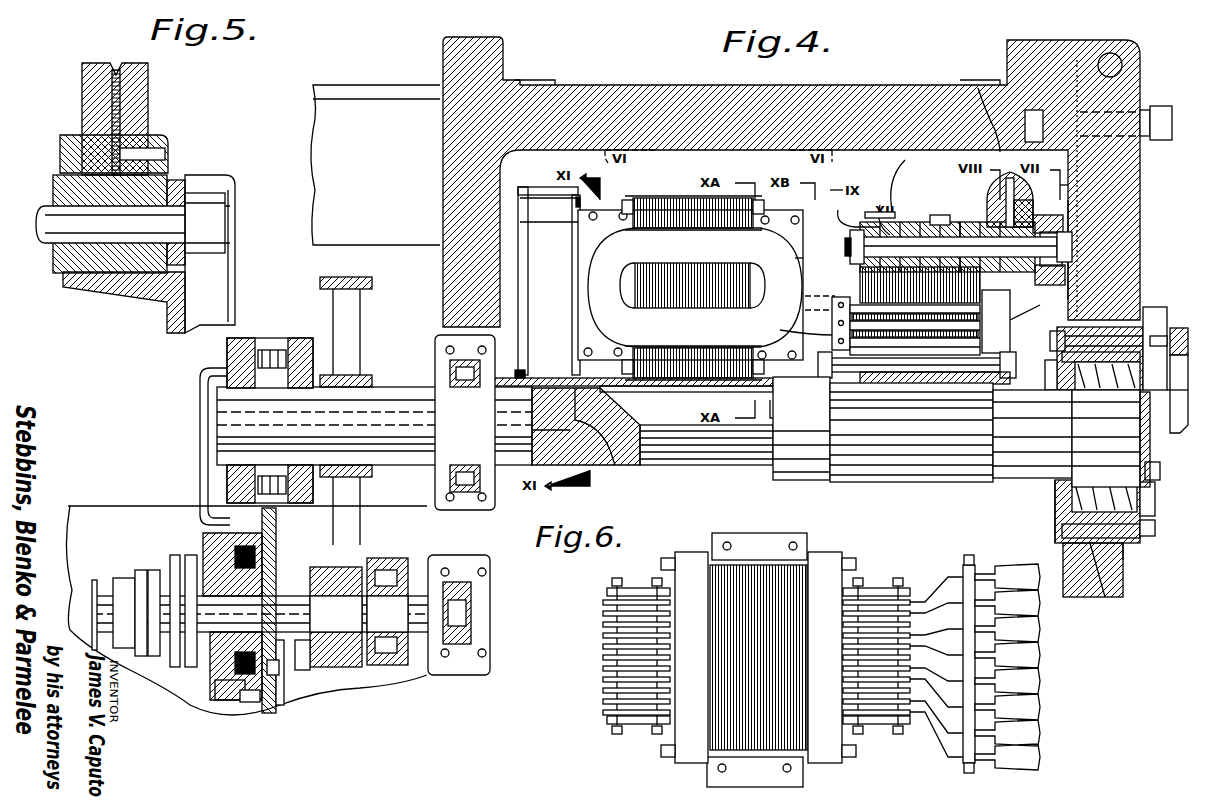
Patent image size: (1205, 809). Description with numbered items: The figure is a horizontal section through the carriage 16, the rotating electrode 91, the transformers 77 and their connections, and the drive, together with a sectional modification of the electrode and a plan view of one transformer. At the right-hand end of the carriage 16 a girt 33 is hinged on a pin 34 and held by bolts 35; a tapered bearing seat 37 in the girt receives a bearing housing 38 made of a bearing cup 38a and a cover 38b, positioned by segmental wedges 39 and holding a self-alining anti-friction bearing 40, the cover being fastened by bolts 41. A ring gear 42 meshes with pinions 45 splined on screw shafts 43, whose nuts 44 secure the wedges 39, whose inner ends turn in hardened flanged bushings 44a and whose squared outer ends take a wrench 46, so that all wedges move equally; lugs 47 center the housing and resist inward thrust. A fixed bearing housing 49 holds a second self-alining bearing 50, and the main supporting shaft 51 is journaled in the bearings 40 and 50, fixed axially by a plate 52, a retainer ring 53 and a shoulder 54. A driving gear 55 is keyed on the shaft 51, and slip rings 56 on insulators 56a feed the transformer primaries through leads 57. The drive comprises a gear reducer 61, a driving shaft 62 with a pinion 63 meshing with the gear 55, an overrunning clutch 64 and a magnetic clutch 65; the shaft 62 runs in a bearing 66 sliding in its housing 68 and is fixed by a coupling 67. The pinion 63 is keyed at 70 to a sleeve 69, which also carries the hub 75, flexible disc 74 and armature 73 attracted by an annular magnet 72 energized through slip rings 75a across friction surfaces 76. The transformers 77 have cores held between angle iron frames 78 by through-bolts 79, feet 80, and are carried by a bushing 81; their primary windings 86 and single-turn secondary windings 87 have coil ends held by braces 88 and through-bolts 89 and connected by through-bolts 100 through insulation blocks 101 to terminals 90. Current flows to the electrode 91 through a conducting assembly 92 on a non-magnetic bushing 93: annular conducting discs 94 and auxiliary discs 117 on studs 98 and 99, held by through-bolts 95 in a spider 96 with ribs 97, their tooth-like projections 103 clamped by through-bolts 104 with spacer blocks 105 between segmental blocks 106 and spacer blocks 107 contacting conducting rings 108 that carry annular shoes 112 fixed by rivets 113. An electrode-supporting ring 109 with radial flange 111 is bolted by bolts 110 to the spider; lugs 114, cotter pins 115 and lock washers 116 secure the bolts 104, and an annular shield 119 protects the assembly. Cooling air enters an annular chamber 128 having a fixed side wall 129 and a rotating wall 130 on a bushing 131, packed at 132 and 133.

In FIG. 4, the carriage 16 is at (622, 88).
In FIG. 4, the girt 33 is at (1120, 237).
In FIG. 4, the pin 34 is at (1124, 64).
In FIG. 4, the bolt 35 is at (1162, 112).
In FIG. 4, the tapered bearing seat 37 is at (1115, 327).
In FIG. 4, the bearing housing 38 is at (1058, 513).
In FIG. 4, the bearing cup 38a is at (1055, 494).
In FIG. 4, the cover 38b is at (1120, 545).
In FIG. 4, the segmental wedges 39 is at (1080, 340).
In FIG. 4, the self-alining anti-friction bearing 40 is at (1152, 499).
In FIG. 4, the bolts 41 is at (1150, 528).
In FIG. 4, the ring gear 42 is at (1100, 590).
In FIG. 4, the screw shafts 43 is at (1155, 356).
In FIG. 4, the nuts 44 is at (1055, 345).
In FIG. 4, the hardened flanged bushings 44a is at (1059, 384).
In FIG. 4, the pinions 45 is at (1149, 348).
In FIG. 4, the wrench 46 is at (1165, 383).
In FIG. 4, the lugs 47 is at (1175, 330).
In FIG. 4, the fixed bearing housing 49 is at (438, 358).
In FIG. 4, the self-alining anti-friction bearing 50 is at (455, 375).
In FIG. 4, the main supporting shaft 51 is at (882, 468).
In FIG. 4, the plate 52 is at (1142, 440).
In FIG. 4, the retainer ring 53 is at (1140, 400).
In FIG. 4, the shoulder 54 is at (1078, 410).
In FIG. 4, the driving gear 55 is at (340, 284).
In FIG. 4, the slip rings 56 is at (300, 338).
In FIG. 4, the insulators 56a is at (269, 419).
In FIG. 4, the leads 57 is at (612, 465).
In FIG. 4, the gear reducer 61 is at (82, 560).
In FIG. 4, the driving shaft 62 is at (215, 570).
In FIG. 4, the pinion 63 is at (330, 655).
In FIG. 4, the overrunning clutch 64 is at (385, 558).
In FIG. 4, the magnetic clutch 65 is at (225, 700).
In FIG. 4, the bearing 66 is at (458, 567).
In FIG. 4, the fixed coupling 67 is at (143, 570).
In FIG. 4, the housing 68 is at (471, 640).
In FIG. 4, the sleeve 69 is at (345, 640).
In FIG. 4, the key 70 is at (320, 560).
In FIG. 4, the annular magnet 72 is at (191, 667).
In FIG. 4, the annular armature 73 is at (280, 670).
In FIG. 4, the flexible disc 74 is at (285, 671).
In FIG. 4, the hub 75 is at (305, 670).
In FIG. 4, the slip rings 75a is at (175, 667).
In FIG. 4, the friction surfaces 76 is at (250, 703).
In FIG. 4, the transformers 77 is at (640, 296).
In FIG. 6, the transformers 77 is at (712, 578).
In FIG. 4, the rectangular angle iron frames 78 is at (640, 196).
In FIG. 6, the rectangular angle iron frames 78 is at (820, 562).
In FIG. 4, the through-bolts 79 is at (676, 196).
In FIG. 6, the through-bolts 79 is at (855, 572).
In FIG. 4, the feet 80 is at (690, 285).
In FIG. 6, the feet 80 is at (748, 540).
In FIG. 4, the bushing 81 is at (685, 392).
In FIG. 6, the primary windings 86 is at (603, 626).
In FIG. 4, the secondary windings 87 is at (598, 275).
In FIG. 6, the secondary windings 87 is at (603, 643).
In FIG. 6, the braces 88 is at (627, 588).
In FIG. 6, the through-bolts 89 is at (895, 585).
In FIG. 4, the terminals 90 is at (805, 310).
In FIG. 4, the electrode 91 is at (982, 108).
In FIG. 4, the conducting assembly 92 is at (905, 218).
In FIG. 4, the bushing 93 is at (842, 352).
In FIG. 4, the annular conducting discs 94 is at (996, 321).
In FIG. 4, the through-bolts 95 is at (985, 384).
In FIG. 4, the annular spider 96 is at (1010, 366).
In FIG. 4, the connecting ribs 97 is at (1025, 327).
In FIG. 4, the studs 98 is at (930, 340).
In FIG. 6, the studs 98 is at (1032, 747).
In FIG. 6, the studs 99 is at (1030, 728).
In FIG. 4, the through-bolts 100 is at (832, 304).
In FIG. 6, the through-bolts 100 is at (966, 558).
In FIG. 4, the blocks of insulation 101 is at (780, 330).
In FIG. 6, the blocks of insulation 101 is at (955, 582).
In FIG. 4, the tooth-like projections 103 is at (942, 215).
In FIG. 4, the through-bolts 104 is at (898, 225).
In FIG. 4, the spacer blocks 105 is at (968, 225).
In FIG. 4, the segmental blocks 106 is at (880, 205).
In FIG. 5, the spacer blocks 107 is at (70, 186).
In FIG. 4, the spacer blocks 107 is at (1051, 216).
In FIG. 5, the conducting rings 108 is at (150, 135).
In FIG. 4, the conducting rings 108 is at (1038, 207).
In FIG. 5, the electrode-supporting ring 109 is at (150, 297).
In FIG. 4, the electrode-supporting ring 109 is at (1065, 272).
In FIG. 4, the bolts 110 is at (1062, 262).
In FIG. 4, the radial flange 111 is at (1075, 225).
In FIG. 5, the annular shoes 112 is at (135, 92).
In FIG. 4, the annular shoes 112 is at (1020, 192).
In FIG. 4, the countersunk rivets 113 is at (1060, 185).
In FIG. 4, the lugs 114 is at (860, 237).
In FIG. 4, the cotter pins 115 is at (855, 248).
In FIG. 4, the lock washer 116 is at (850, 256).
In FIG. 4, the auxiliary discs 117 is at (810, 265).
In FIG. 4, the annular shield 119 is at (916, 187).
In FIG. 4, the annular chamber 128 is at (520, 198).
In FIG. 4, the fixed side wall 129 is at (520, 222).
In FIG. 4, the rotating wall 130 is at (575, 242).
In FIG. 4, the bushing 131 is at (548, 388).
In FIG. 4, the packing 132 is at (521, 371).
In FIG. 4, the packing 133 is at (576, 206).